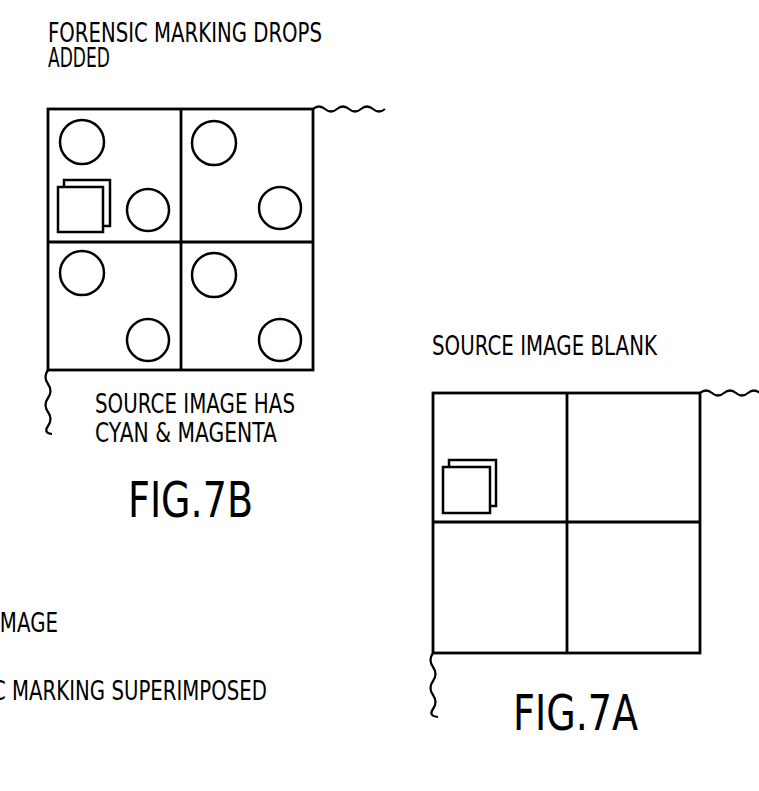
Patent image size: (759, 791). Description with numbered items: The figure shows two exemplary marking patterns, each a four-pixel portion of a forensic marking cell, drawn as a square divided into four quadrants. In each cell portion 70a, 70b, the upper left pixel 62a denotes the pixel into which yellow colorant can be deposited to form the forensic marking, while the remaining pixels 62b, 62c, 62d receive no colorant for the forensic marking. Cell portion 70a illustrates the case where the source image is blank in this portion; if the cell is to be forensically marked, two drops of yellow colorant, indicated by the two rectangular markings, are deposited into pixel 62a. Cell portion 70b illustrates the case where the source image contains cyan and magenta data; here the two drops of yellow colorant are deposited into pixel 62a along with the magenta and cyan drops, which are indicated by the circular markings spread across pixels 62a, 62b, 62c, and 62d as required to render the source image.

In FIG. 7A, the cell portion 70a is at (392, 552).
In FIG. 7B, the cell portion 70b is at (318, 85).
In FIG. 7B, the upper left pixel 62a is at (172, 144).
In FIG. 7B, the pixel 62b is at (304, 144).
In FIG. 7B, the pixel 62c is at (172, 276).
In FIG. 7B, the pixel 62d is at (304, 276).